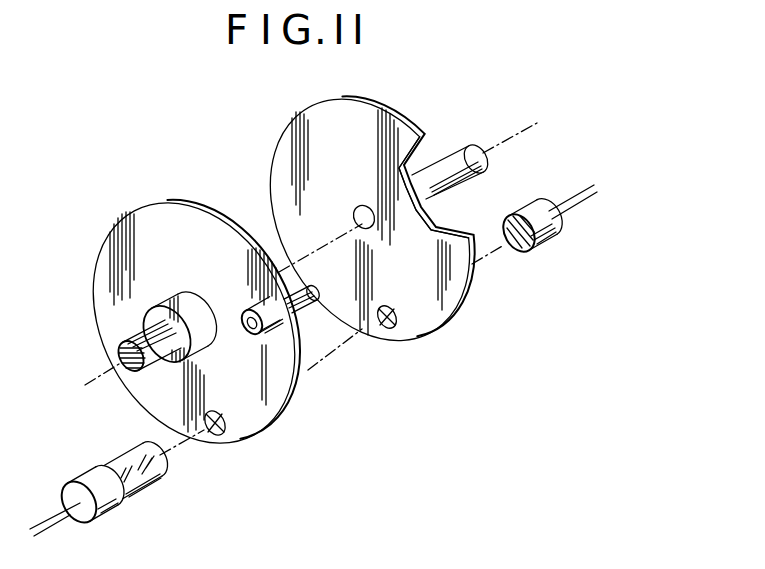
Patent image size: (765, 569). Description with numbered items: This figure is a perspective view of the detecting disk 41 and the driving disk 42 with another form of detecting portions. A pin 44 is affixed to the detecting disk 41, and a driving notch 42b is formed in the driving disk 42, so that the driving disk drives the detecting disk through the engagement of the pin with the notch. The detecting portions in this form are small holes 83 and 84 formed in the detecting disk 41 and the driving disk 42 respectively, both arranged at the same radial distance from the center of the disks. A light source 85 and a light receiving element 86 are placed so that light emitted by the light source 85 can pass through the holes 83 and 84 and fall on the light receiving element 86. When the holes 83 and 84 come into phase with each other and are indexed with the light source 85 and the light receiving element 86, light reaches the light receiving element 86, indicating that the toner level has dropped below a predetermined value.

The detecting disk 41 is at (190, 216).
The driving disk 42 is at (310, 111).
The driving notch 42b is at (452, 217).
The pin 44 is at (314, 314).
The small hole 83 is at (221, 437).
The small hole 84 is at (386, 330).
The light source 85 is at (141, 486).
The light receiving element 86 is at (532, 244).